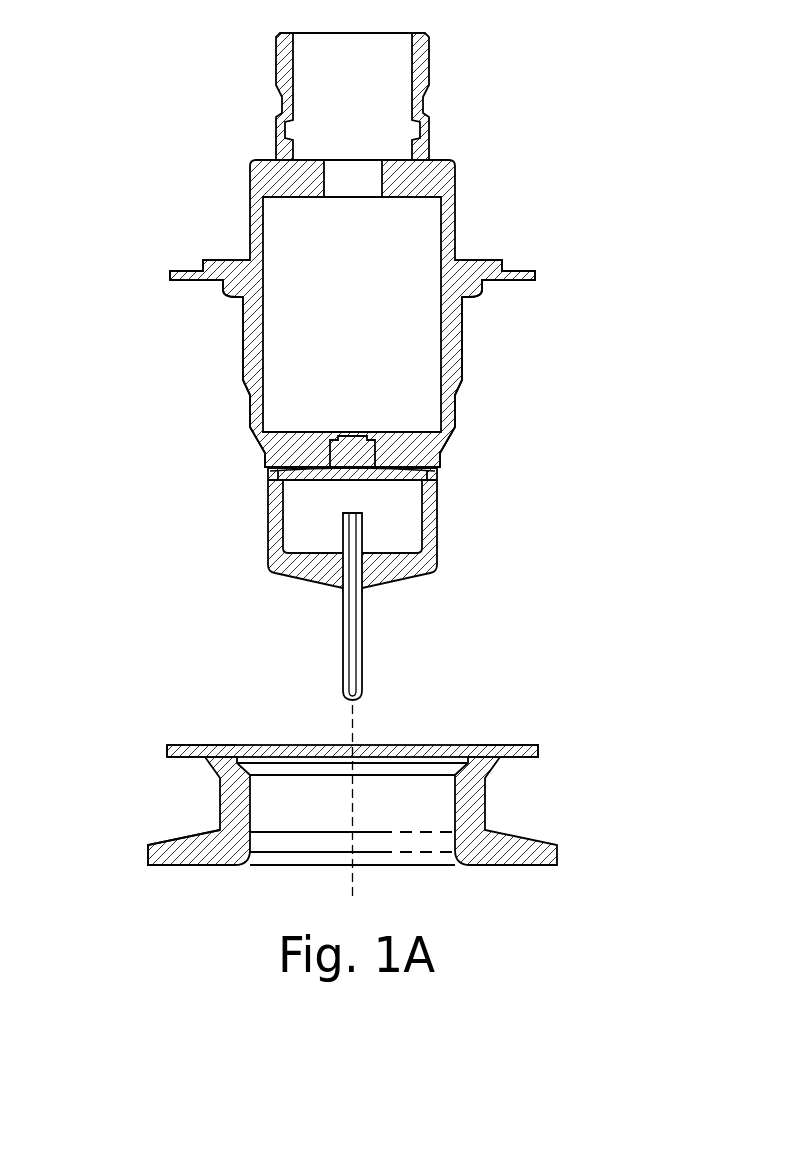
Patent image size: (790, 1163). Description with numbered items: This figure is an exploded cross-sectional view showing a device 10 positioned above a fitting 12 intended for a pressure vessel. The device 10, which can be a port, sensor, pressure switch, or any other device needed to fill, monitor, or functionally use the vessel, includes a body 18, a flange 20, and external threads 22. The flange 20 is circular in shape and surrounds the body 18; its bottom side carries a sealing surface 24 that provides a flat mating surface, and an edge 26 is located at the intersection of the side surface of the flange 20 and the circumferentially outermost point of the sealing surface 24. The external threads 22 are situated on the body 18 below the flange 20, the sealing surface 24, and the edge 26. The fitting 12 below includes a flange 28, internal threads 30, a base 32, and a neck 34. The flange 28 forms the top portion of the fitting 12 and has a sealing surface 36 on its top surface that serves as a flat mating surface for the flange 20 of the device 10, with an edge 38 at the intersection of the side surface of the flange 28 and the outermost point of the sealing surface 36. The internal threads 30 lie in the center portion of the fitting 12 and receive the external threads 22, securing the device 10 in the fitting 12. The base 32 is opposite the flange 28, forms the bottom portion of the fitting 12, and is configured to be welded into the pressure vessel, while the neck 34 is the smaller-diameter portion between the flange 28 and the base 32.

The device 10 is at (497, 115).
The fitting 12 is at (536, 680).
The body 18 is at (250, 237).
The flange 20 is at (190, 270).
The external threads 22 is at (243, 362).
The sealing surface 24 is at (213, 283).
The edge 26 is at (170, 279).
The flange 28 is at (197, 745).
The internal threads 30 is at (222, 805).
The base 32 is at (178, 857).
The neck 34 is at (485, 800).
The sealing surface 36 is at (513, 745).
The edge 38 is at (540, 746).